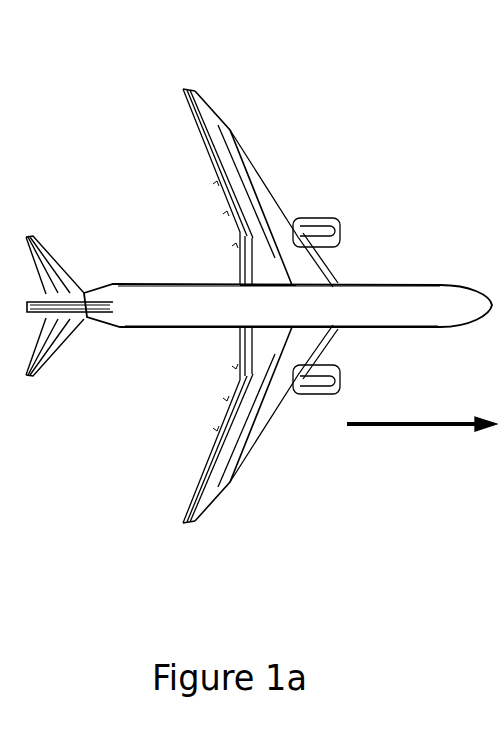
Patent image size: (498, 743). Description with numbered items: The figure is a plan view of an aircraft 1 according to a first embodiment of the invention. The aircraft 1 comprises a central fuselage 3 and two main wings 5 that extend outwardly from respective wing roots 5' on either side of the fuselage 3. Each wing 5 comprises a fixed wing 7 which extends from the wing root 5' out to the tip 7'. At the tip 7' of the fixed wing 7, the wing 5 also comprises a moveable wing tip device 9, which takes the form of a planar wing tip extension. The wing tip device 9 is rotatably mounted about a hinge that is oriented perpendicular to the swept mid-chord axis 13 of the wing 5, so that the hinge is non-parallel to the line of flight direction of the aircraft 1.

The aircraft 1 is at (259, 312).
The central fuselage 3 is at (183, 297).
The main wing 5 is at (232, 312).
The wing root 5' is at (361, 250).
The fixed wing 7 is at (286, 424).
The tip 7' is at (275, 457).
The moveable wing tip device 9 is at (195, 507).
The swept mid-chord axis 13 is at (263, 222).